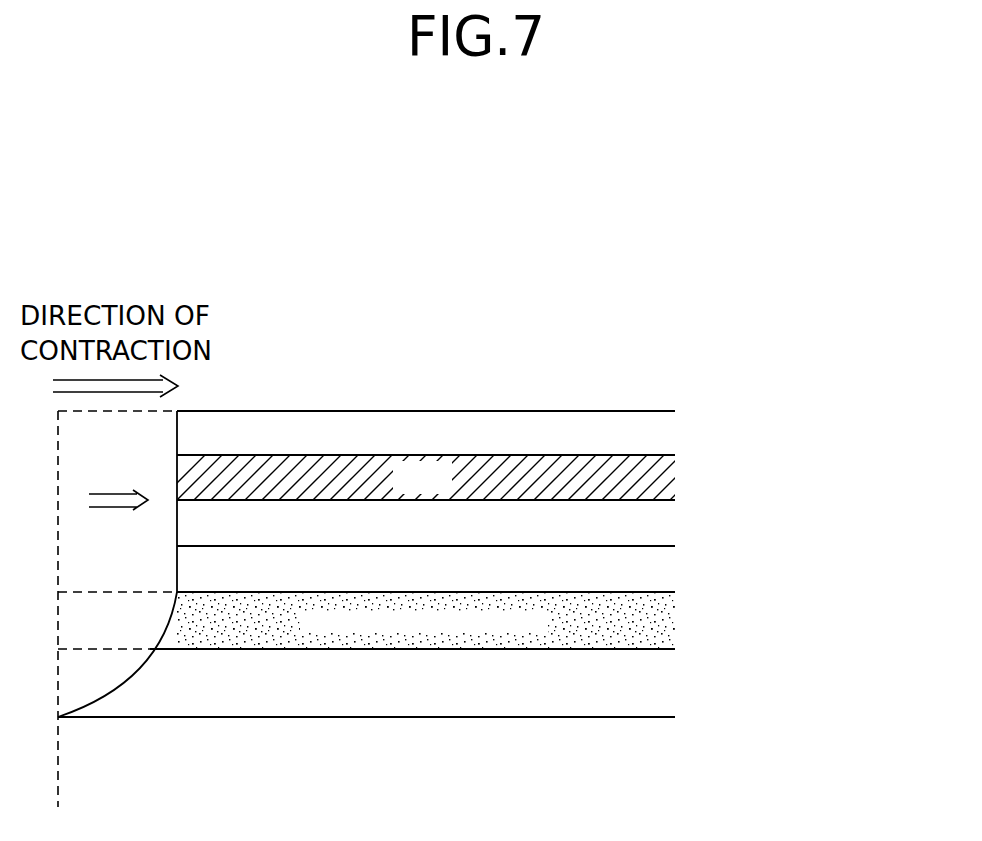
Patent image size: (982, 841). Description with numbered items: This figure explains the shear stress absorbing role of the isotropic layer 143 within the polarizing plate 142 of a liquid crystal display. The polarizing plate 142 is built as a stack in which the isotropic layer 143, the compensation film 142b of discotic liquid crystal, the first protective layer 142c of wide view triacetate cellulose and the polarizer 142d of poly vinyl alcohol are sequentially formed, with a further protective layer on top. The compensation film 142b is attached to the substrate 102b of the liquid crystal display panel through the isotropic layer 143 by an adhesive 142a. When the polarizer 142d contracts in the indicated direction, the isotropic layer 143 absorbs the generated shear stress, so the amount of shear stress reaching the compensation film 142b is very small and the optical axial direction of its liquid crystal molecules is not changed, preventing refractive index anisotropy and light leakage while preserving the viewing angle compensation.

The polarizing plate 142 is at (795, 433).
The polarizer 142d is at (662, 425).
The first protective layer 142c is at (662, 525).
The compensation film 142b is at (662, 567).
The isotropic layer 143 is at (675, 620).
The adhesive 142a is at (662, 680).
The substrate 102b is at (662, 745).